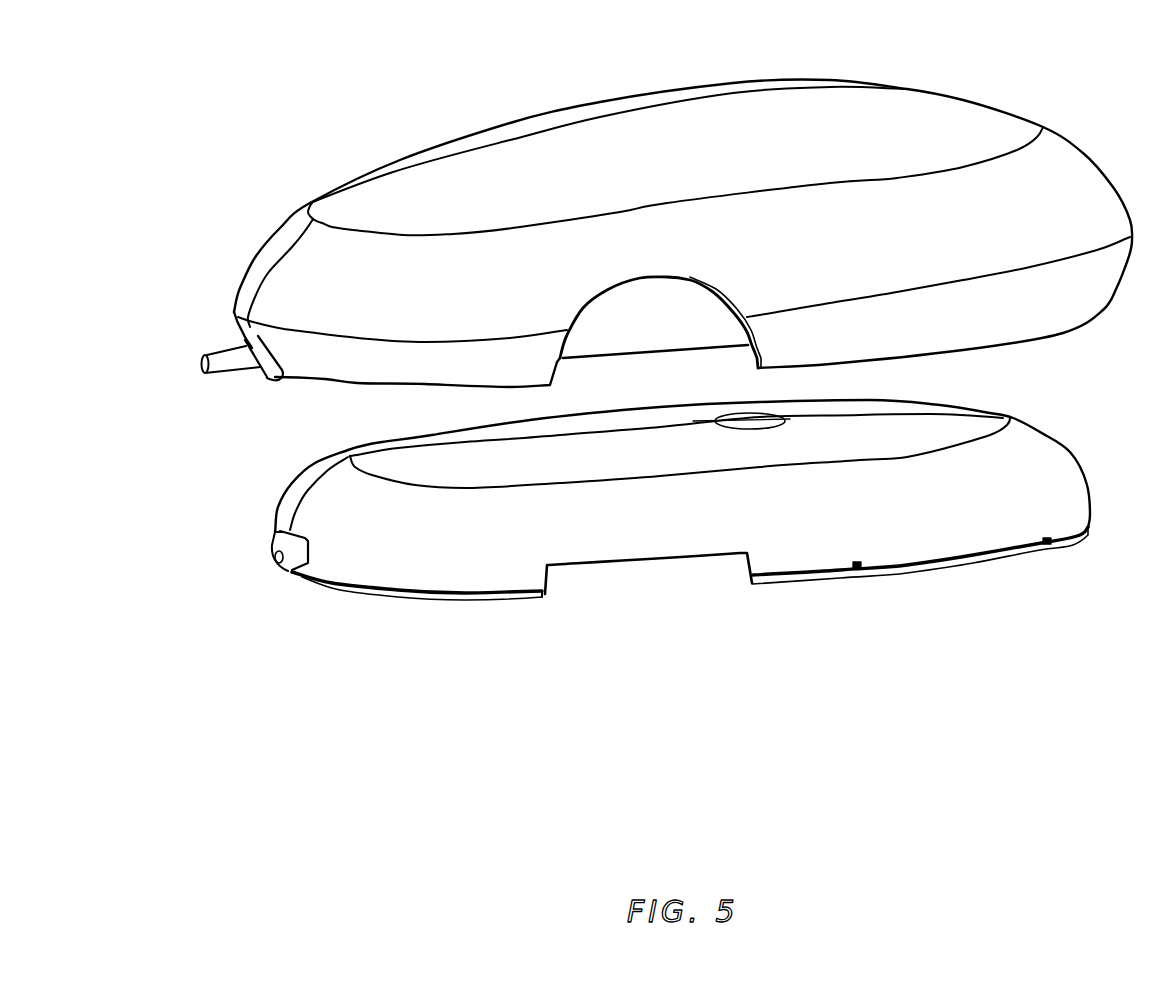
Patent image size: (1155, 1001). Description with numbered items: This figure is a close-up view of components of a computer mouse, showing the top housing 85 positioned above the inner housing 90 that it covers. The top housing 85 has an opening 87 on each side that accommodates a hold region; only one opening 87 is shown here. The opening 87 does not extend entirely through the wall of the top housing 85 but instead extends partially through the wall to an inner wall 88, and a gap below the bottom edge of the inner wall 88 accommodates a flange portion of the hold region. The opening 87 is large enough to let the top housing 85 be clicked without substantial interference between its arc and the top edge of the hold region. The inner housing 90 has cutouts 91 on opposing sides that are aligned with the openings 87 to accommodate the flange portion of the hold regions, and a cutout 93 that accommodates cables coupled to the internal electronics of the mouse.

The top housing 85 is at (667, 226).
The opening 87 is at (746, 356).
The inner wall 88 is at (672, 325).
The inner housing 90 is at (687, 529).
The cutout 91 is at (657, 579).
The cutout 93 is at (298, 558).